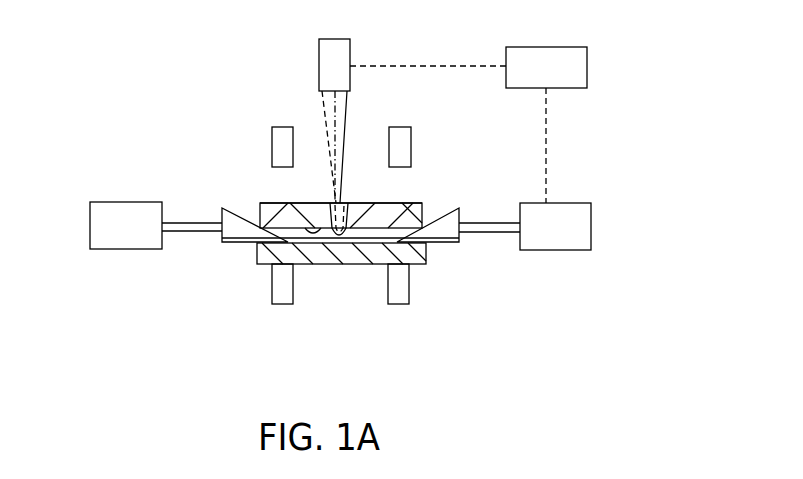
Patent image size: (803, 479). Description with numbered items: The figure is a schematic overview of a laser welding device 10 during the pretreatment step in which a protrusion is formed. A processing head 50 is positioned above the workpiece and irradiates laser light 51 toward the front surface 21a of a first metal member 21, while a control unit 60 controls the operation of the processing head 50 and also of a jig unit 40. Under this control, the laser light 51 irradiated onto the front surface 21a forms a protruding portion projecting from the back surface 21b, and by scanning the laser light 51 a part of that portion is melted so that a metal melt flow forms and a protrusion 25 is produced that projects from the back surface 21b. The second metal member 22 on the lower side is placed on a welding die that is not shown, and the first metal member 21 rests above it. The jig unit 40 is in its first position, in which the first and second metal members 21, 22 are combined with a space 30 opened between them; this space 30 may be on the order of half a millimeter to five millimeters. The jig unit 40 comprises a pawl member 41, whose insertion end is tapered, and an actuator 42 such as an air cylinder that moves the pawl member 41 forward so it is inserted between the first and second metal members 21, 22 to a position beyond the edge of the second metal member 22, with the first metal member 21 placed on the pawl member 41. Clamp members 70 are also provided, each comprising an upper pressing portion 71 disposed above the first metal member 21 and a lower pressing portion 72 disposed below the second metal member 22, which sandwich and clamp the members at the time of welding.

The laser welding device 10 is at (114, 40).
The first metal member 21 is at (376, 201).
The front surface 21a is at (362, 203).
The back surface 21b is at (299, 207).
The second metal member 22 is at (425, 256).
The protrusion 25 is at (335, 238).
The space 30 is at (372, 315).
The jig unit 40 is at (341, 217).
The pawl member 41 is at (230, 237).
The actuator 42 is at (110, 227).
The processing head 50 is at (333, 56).
The laser light 51 is at (325, 130).
The control unit 60 is at (573, 67).
The clamp member 70 is at (358, 117).
The upper pressing portion 71 is at (276, 148).
The lower pressing portion 72 is at (283, 298).